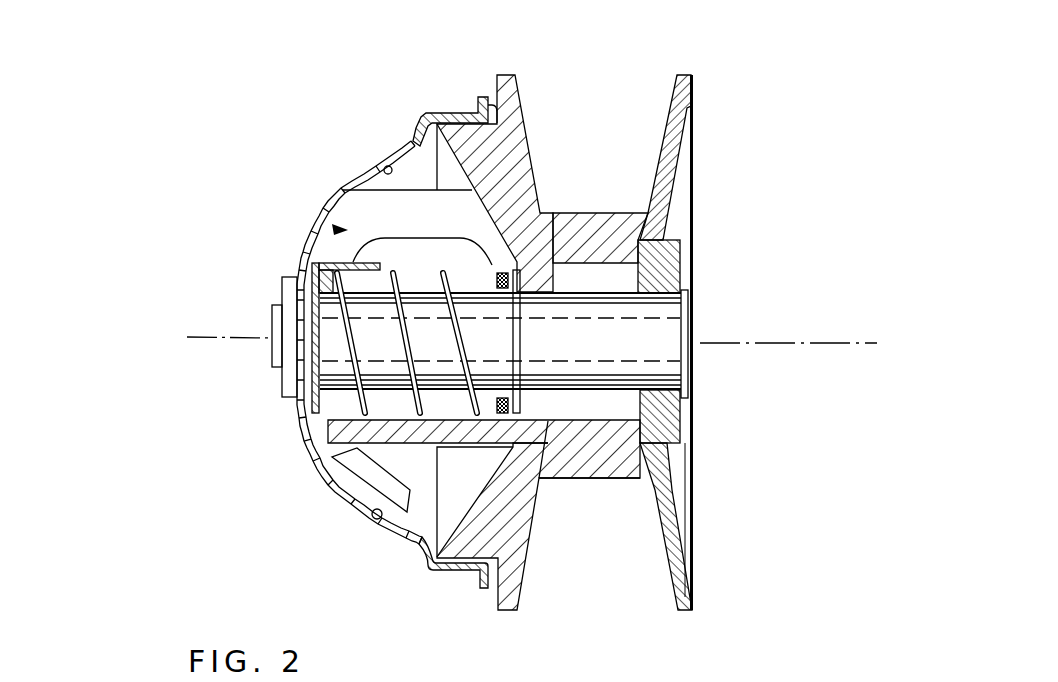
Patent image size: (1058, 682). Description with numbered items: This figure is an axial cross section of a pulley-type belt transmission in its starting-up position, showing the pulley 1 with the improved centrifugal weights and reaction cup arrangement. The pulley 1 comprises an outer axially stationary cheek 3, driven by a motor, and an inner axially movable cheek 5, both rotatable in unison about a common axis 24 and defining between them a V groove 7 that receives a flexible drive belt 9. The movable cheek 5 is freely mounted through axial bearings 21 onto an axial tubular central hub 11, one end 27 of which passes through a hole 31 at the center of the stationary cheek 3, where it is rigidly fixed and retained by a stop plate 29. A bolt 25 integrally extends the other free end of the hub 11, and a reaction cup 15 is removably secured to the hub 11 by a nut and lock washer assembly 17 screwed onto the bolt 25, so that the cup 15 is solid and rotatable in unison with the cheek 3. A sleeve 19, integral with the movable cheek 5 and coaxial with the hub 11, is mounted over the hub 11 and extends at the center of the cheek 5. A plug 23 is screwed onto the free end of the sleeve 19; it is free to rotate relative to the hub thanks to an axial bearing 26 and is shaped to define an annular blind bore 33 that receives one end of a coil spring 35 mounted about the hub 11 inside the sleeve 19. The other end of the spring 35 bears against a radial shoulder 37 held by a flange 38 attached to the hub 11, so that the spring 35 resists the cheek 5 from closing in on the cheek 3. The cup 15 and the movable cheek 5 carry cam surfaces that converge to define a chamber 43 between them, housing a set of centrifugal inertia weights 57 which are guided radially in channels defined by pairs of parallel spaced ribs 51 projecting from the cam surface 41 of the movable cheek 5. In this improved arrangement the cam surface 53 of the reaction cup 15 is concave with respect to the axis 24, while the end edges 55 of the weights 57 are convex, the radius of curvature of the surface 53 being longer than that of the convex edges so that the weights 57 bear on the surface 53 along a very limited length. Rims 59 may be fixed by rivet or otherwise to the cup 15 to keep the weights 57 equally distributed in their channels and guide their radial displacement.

The pulley 1 is at (716, 90).
The outer axially stationary cheek 3 is at (678, 172).
The inner axially movable cheek 5 is at (494, 90).
The V groove 7 is at (599, 98).
The flexible drive belt 9 is at (600, 220).
The axial tubular central hub 11 is at (326, 422).
The reaction cup 15 is at (353, 508).
The nut and lock washer assembly 17 is at (287, 402).
The sleeve 19 is at (394, 444).
The axial bearings 21 is at (556, 406).
The plug 23 is at (327, 453).
The common axis 24 is at (838, 343).
The bolt 25 is at (272, 322).
The axial bearing 26 is at (298, 352).
The end of the hub 27 is at (662, 282).
The stop plate 29 is at (692, 305).
The hole 31 is at (648, 362).
The annular blind bore 33 is at (357, 403).
The coil spring 35 is at (476, 353).
The radial shoulder 37 is at (519, 368).
The flange 38 is at (545, 325).
The cam surface 41 is at (412, 130).
The chamber 43 is at (490, 100).
The ribs 51 is at (415, 538).
The cam surface 53 is at (410, 147).
The end edges 55 is at (345, 188).
The centrifugal inertia weights 57 is at (318, 228).
The rims 59 is at (418, 508).